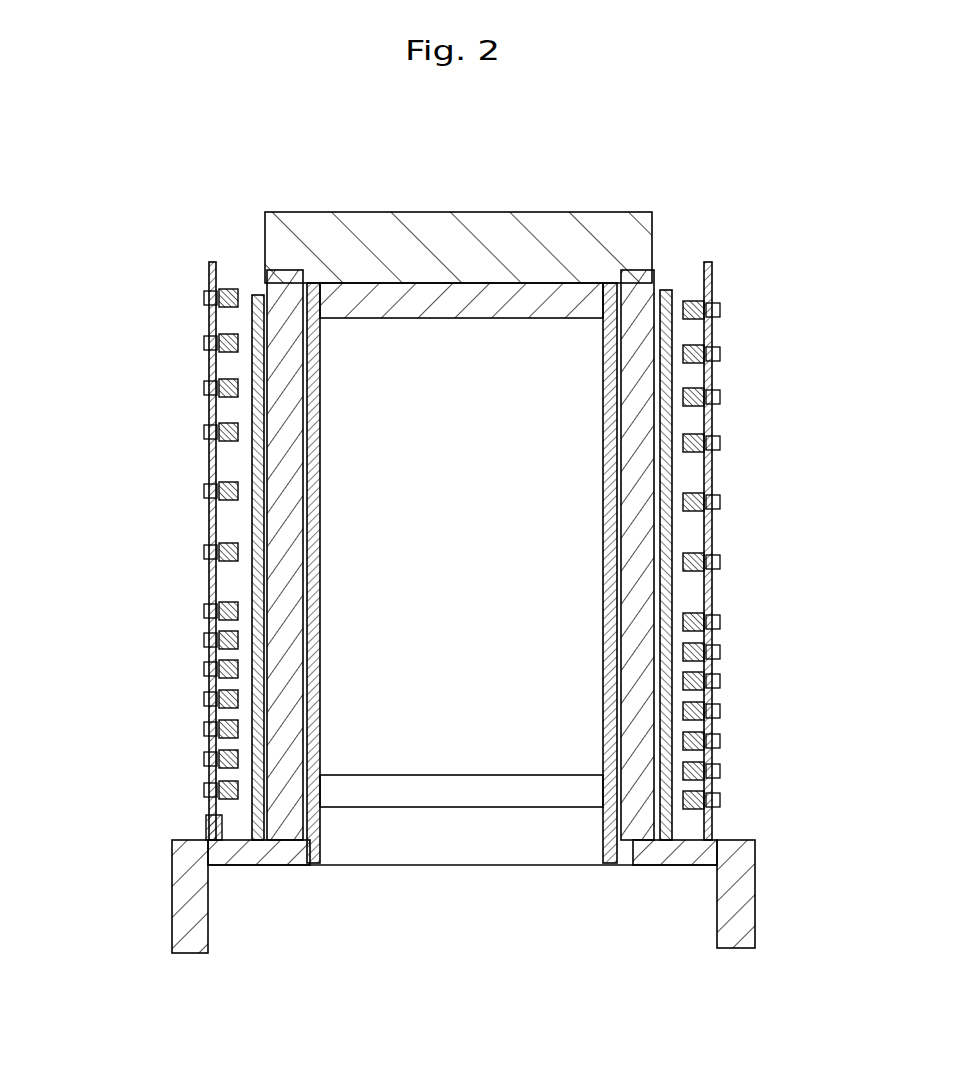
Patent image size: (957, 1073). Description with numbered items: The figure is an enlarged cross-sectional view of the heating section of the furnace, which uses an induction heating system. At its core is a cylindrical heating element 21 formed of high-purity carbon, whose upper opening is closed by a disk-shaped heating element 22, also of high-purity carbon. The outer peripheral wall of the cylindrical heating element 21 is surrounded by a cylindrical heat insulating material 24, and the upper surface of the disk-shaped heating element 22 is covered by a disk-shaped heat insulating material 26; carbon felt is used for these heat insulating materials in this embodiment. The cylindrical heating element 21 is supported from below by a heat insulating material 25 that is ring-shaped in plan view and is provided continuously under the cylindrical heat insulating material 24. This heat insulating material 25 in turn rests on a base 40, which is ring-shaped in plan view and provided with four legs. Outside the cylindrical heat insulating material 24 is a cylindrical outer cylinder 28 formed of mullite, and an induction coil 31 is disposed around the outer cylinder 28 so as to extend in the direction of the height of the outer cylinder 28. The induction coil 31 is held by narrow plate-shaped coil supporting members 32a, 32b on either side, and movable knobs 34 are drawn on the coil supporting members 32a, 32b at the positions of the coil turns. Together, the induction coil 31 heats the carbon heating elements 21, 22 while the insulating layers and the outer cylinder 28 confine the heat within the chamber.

The heating element 21 is at (320, 462).
The disk-shaped heating element 22 is at (436, 300).
The cylindrical heat insulating material 24 is at (295, 513).
The heat insulating material 25 is at (305, 830).
The disk-shaped heat insulating material 26 is at (505, 240).
The outer cylinder 28 is at (667, 290).
The induction coil 31 is at (777, 828).
The coil supporting member 32a is at (209, 280).
The coil supporting member 32b is at (713, 278).
The movable knob 34 is at (203, 343).
The base 40 is at (178, 935).